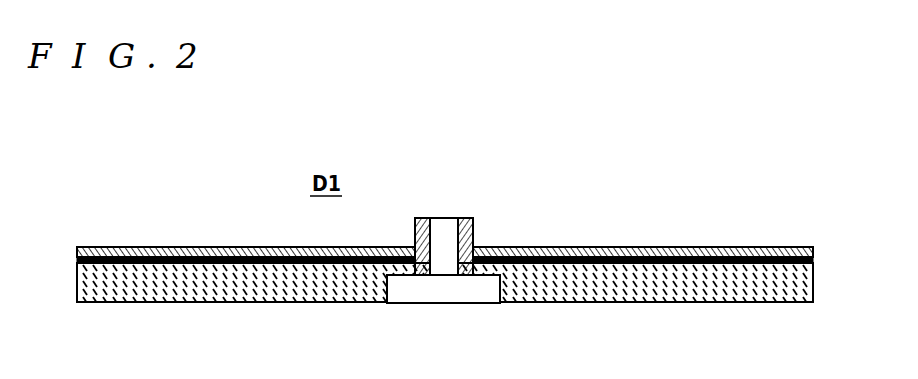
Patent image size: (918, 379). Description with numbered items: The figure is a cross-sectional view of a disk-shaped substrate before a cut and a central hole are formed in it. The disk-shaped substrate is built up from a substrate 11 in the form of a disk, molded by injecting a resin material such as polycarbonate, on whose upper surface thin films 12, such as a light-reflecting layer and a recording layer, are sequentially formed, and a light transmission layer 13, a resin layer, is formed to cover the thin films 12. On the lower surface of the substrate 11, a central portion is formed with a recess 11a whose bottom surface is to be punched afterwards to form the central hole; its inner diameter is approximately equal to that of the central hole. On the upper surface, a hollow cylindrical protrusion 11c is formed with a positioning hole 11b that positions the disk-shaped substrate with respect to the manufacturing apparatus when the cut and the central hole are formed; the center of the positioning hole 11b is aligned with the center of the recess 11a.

The substrate 11 is at (803, 283).
The recess 11a is at (412, 280).
The positioning hole 11b is at (445, 255).
The hollow cylindrical protrusion 11c is at (473, 228).
The thin films 12 is at (812, 259).
The light transmission layer 13 is at (803, 250).